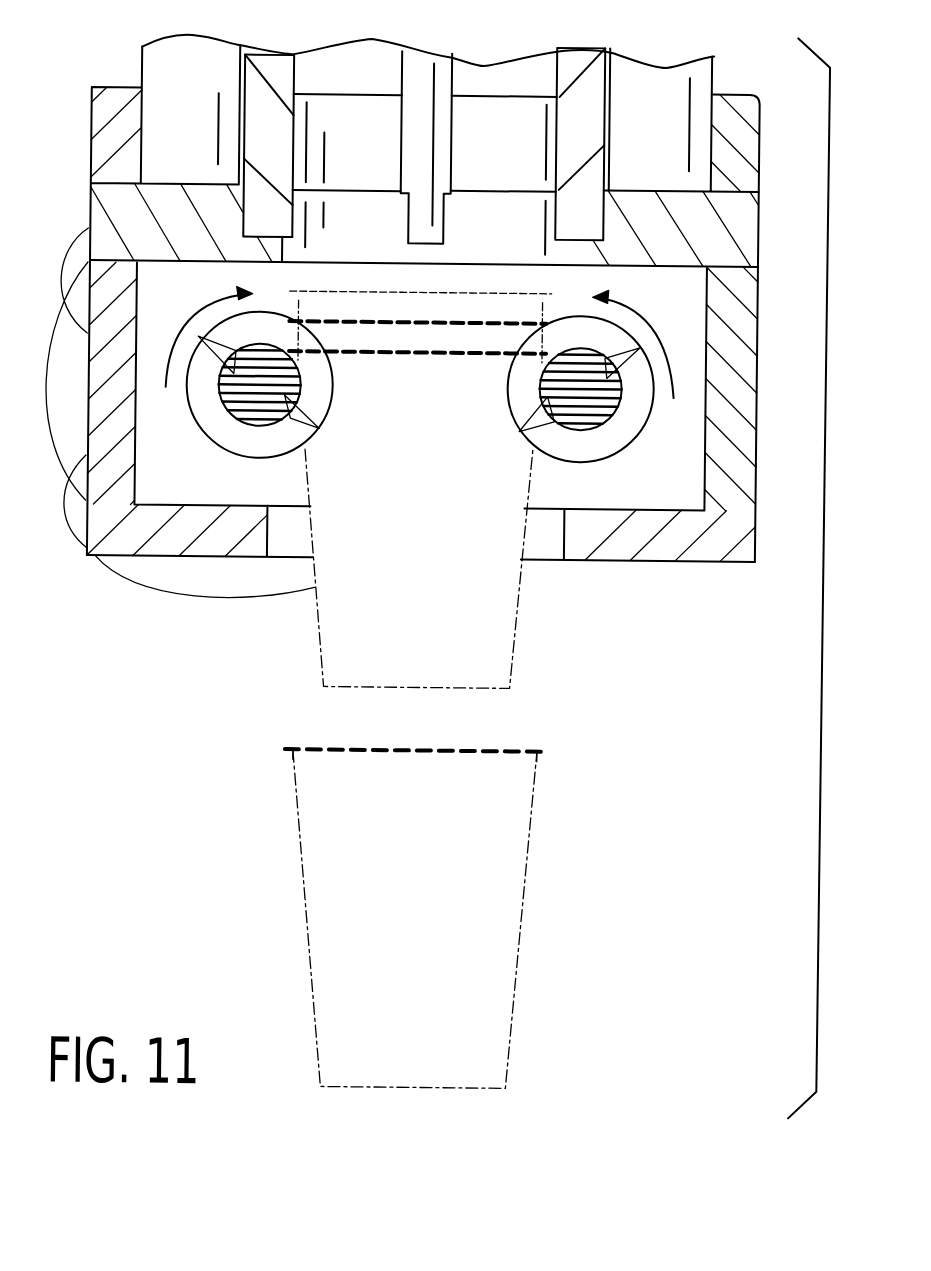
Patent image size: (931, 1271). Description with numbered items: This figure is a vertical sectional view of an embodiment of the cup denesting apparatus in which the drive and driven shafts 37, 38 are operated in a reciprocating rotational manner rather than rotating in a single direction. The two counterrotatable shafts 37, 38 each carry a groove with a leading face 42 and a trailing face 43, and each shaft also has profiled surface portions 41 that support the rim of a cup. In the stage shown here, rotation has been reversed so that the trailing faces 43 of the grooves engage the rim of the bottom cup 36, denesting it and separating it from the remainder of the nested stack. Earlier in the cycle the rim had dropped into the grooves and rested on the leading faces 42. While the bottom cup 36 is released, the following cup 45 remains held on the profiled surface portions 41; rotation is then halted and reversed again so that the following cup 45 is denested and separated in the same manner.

The bottom cup 36 is at (498, 935).
The drive shaft 37 is at (269, 407).
The driven shaft 38 is at (636, 408).
The profiled surface portions 41 is at (264, 318).
The leading faces 42 is at (297, 436).
The trailing faces 43 is at (302, 398).
The following cup 45 is at (498, 622).